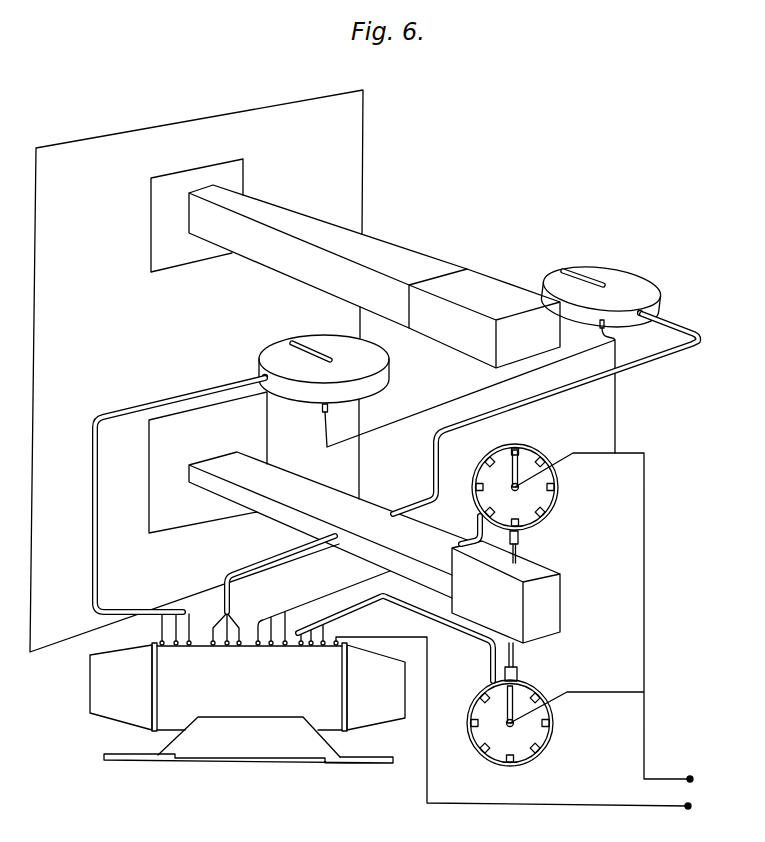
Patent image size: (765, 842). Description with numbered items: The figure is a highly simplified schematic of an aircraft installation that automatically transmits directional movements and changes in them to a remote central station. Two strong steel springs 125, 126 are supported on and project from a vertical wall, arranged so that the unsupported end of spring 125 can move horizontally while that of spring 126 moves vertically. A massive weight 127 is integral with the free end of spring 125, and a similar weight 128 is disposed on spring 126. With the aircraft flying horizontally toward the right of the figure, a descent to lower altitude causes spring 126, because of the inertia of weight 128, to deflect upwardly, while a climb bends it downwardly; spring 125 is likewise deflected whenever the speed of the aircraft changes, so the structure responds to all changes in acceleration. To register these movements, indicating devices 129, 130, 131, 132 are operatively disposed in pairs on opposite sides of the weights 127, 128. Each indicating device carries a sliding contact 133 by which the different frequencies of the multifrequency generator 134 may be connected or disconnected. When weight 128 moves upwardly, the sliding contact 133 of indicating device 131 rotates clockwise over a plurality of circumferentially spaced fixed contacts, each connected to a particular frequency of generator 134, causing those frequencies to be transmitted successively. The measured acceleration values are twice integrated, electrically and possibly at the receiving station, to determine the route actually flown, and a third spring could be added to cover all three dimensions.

The steel spring 125 is at (372, 253).
The steel spring 126 is at (343, 515).
The massive weight 127 is at (343, 147).
The weight 128 is at (542, 603).
The indicating device 129 is at (277, 352).
The indicating device 130 is at (625, 287).
The indicating device 131 is at (532, 448).
The indicating device 132 is at (525, 762).
The sliding contact 133 is at (302, 350).
The multifrequency generator 134 is at (192, 695).